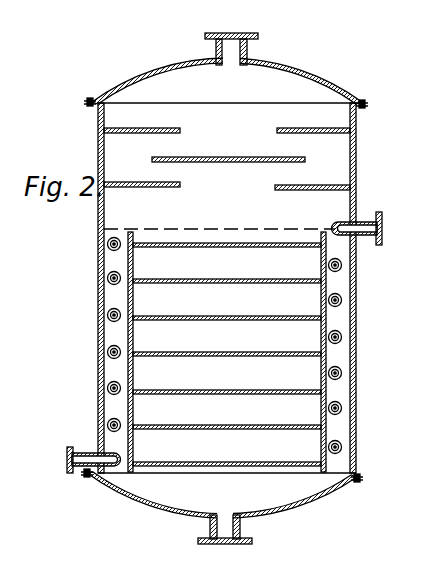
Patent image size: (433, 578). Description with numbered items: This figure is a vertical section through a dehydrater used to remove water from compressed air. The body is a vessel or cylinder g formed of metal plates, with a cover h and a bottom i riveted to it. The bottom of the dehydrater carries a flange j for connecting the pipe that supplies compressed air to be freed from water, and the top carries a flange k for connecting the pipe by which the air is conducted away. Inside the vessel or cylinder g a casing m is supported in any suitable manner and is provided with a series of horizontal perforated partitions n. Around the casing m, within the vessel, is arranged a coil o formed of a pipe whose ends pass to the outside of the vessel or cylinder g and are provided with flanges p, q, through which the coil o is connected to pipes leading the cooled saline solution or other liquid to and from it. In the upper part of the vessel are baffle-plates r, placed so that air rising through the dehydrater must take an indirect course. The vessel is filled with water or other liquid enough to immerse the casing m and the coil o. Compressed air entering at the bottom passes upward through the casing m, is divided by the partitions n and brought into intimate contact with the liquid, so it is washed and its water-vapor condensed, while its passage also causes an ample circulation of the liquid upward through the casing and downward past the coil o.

The cover h is at (306, 88).
The bottom i is at (308, 504).
The flange k is at (258, 38).
The flange j is at (254, 540).
The vessel or cylinder g is at (219, 209).
The baffle-plates r is at (227, 149).
The casing m is at (133, 232).
The horizontal perforated partitions n is at (227, 344).
The coil o is at (107, 247).
The flange q is at (365, 228).
The flange p is at (84, 460).